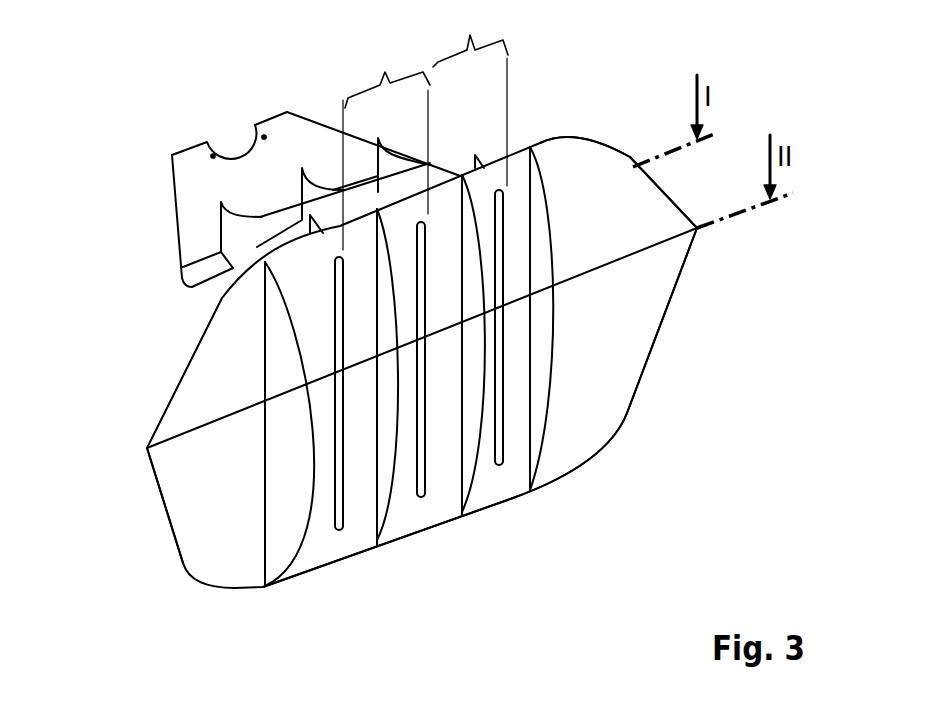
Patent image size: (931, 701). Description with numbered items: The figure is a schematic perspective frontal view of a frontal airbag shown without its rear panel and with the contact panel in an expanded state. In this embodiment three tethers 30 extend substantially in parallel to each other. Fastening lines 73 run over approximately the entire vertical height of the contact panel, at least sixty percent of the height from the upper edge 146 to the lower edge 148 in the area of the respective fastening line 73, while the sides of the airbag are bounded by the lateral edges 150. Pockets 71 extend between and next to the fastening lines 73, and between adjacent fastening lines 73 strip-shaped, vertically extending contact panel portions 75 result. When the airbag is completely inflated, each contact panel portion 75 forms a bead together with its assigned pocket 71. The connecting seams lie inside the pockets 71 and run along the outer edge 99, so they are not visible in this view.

The tether 30 is at (230, 230).
The pocket 71 is at (412, 400).
The fastening line 73 is at (502, 467).
The contact panel portion 75 is at (425, 127).
The outer edge 99 is at (555, 370).
The upper edge 146 is at (573, 138).
The lower edge 148 is at (523, 494).
The lateral edge 150 is at (670, 298).